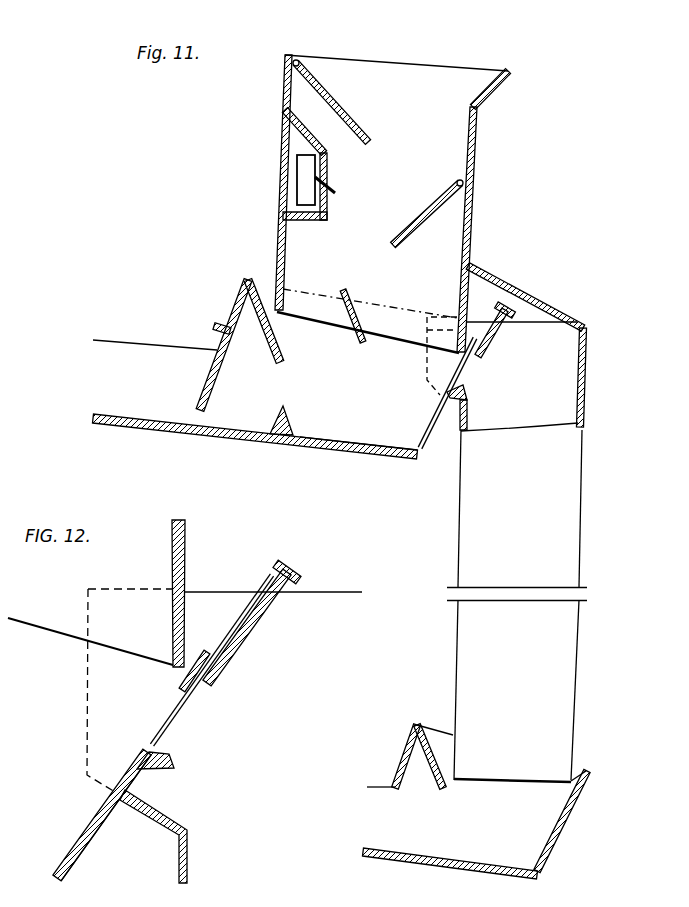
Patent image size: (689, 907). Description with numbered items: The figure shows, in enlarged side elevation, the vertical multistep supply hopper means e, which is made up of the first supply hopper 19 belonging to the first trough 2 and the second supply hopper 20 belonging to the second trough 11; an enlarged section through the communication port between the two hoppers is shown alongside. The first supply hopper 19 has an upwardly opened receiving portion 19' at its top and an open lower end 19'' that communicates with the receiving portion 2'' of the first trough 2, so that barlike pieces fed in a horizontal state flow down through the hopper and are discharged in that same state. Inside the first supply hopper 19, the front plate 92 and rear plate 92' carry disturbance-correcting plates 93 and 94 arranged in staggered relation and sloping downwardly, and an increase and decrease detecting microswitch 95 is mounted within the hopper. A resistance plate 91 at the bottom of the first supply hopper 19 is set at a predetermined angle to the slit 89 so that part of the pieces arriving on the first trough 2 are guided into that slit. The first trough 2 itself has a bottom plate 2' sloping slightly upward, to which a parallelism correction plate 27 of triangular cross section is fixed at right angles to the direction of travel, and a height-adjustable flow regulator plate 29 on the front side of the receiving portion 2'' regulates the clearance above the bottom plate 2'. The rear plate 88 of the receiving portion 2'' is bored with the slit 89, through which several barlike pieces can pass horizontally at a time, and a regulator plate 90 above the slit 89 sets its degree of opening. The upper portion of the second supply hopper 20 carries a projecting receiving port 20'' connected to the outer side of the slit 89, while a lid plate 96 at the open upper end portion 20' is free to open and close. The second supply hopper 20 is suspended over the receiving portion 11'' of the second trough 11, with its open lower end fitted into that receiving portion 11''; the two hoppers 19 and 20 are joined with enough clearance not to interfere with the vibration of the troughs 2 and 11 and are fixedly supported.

In FIG. 11, the first trough 2 is at (155, 326).
In FIG. 12, the first trough 2 is at (106, 819).
In FIG. 11, the bottom plate 2' is at (255, 416).
In FIG. 11, the receiving portion 2'' is at (357, 421).
In FIG. 12, the receiving portion 2'' is at (102, 690).
In FIG. 11, the second trough 11 is at (477, 827).
In FIG. 11, the receiving portion 11'' is at (476, 779).
In FIG. 11, the first supply hopper 19 is at (496, 105).
In FIG. 11, the receiving portion 19' is at (396, 50).
In FIG. 11, the open lower end 19'' is at (368, 326).
In FIG. 11, the second supply hopper 20 is at (534, 606).
In FIG. 12, the second supply hopper 20 is at (177, 836).
In FIG. 11, the open upper end portion 20' is at (579, 355).
In FIG. 11, the receiving port 20'' is at (497, 578).
In FIG. 11, the parallelism correction plate 27 is at (280, 417).
In FIG. 11, the flow regulator plate 29 is at (203, 377).
In FIG. 12, the rear plate 88 is at (82, 837).
In FIG. 11, the slit 89 is at (441, 368).
In FIG. 12, the slit 89 is at (183, 717).
In FIG. 11, the regulator plate 90 is at (491, 338).
In FIG. 12, the regulator plate 90 is at (268, 574).
In FIG. 11, the resistance plate 91 is at (355, 297).
In FIG. 11, the front plate 92 is at (262, 182).
In FIG. 12, the front plate 92 is at (185, 593).
In FIG. 11, the rear plate 92' is at (492, 229).
In FIG. 11, the disturbance-correcting plate 93 is at (357, 118).
In FIG. 11, the disturbance-correcting plate 94 is at (425, 212).
In FIG. 11, the increase and decrease detecting microswitch 95 is at (305, 178).
In FIG. 11, the lid plate 96 is at (530, 294).
In FIG. 11, the vertical multistep supply hopper means e is at (523, 467).